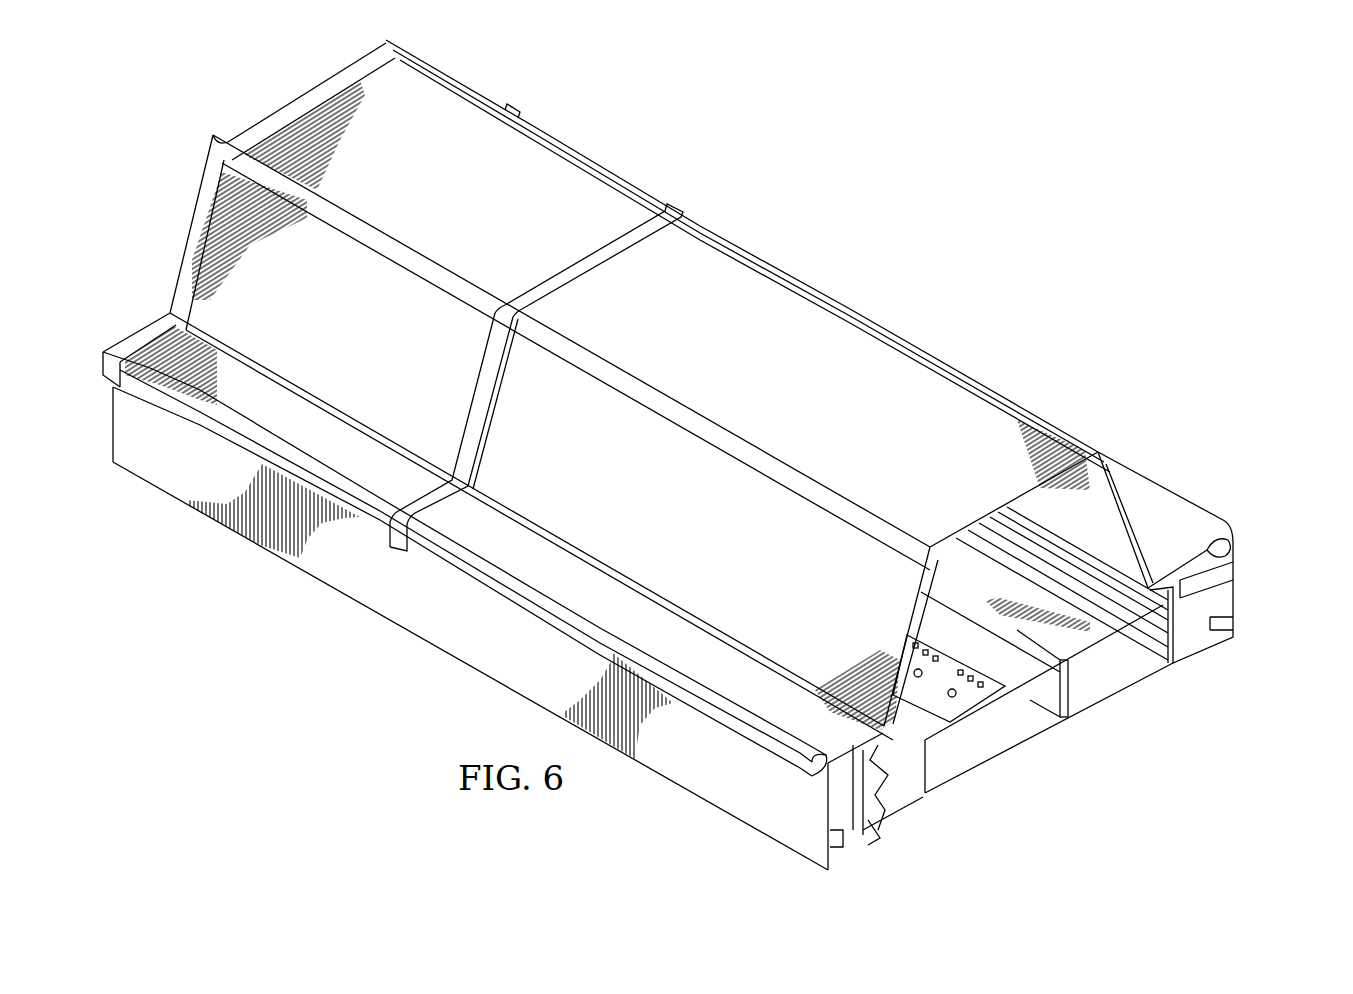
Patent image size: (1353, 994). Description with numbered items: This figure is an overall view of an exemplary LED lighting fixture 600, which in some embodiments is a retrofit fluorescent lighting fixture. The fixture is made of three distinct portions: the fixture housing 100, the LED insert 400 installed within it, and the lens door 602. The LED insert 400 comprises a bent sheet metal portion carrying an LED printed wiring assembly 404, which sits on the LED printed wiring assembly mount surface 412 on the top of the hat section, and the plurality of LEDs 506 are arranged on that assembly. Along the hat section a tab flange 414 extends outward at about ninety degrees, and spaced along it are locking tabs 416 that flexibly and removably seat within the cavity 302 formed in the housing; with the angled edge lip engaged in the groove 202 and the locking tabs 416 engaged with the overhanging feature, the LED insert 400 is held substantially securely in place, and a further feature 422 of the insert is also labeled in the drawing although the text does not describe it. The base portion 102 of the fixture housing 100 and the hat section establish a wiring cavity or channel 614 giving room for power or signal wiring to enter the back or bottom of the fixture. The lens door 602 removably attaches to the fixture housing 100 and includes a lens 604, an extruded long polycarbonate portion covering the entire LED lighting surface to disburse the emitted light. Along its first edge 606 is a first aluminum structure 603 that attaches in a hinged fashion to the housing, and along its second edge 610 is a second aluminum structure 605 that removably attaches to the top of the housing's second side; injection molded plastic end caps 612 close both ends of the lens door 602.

The LED lighting fixture 600 is at (850, 228).
The lens 604 is at (960, 405).
The end caps 612 is at (300, 108).
The lens door 602 is at (1137, 500).
The first edge 606 is at (1152, 532).
The first aluminum structure 603 is at (1235, 553).
The groove 202 is at (1167, 660).
The rail channel 422 is at (1143, 690).
The LED insert 400 is at (1075, 682).
The fixture housing 100 is at (1077, 735).
The base portion 102 is at (1025, 755).
The wiring cavity or channel 614 is at (972, 753).
The locking tabs 416 is at (835, 806).
The tab flange 414 is at (912, 818).
The cavity 302 is at (875, 820).
The LEDs 506 is at (990, 692).
The LED printed wiring assembly 404 is at (927, 632).
The LED printed wiring assembly mount surface 412 is at (945, 612).
The second aluminum structure 605 is at (735, 732).
The second edge 610 is at (617, 618).